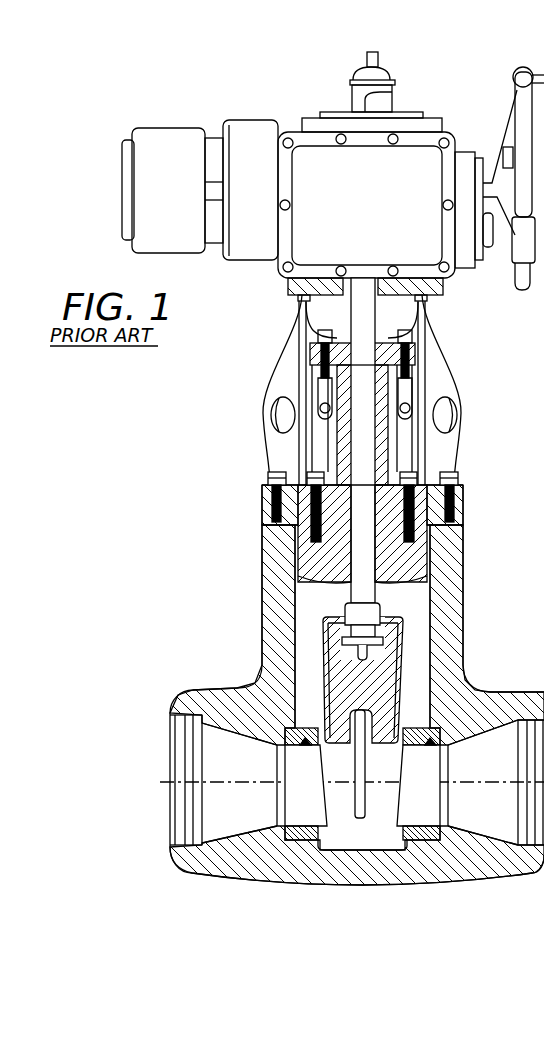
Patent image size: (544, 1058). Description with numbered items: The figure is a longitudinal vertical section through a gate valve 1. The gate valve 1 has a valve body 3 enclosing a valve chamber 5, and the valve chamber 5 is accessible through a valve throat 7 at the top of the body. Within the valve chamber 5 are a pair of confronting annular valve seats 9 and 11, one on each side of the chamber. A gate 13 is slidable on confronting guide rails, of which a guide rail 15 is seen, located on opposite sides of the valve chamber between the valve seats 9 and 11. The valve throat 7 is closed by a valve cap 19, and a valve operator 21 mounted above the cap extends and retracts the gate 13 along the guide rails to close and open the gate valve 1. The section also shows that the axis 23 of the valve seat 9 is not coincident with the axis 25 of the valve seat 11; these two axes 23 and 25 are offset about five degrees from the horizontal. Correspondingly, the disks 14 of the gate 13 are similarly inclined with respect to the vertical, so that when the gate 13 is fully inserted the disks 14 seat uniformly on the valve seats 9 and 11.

The gate valve 1 is at (209, 481).
The valve body 3 is at (262, 566).
The valve chamber 5 is at (420, 656).
The valve throat 7 is at (405, 587).
The valve seat 9 is at (390, 843).
The valve seat 11 is at (337, 843).
The gate 13 is at (337, 623).
The disks 14 is at (323, 650).
The guide rail 15 is at (367, 762).
The valve cap 19 is at (463, 488).
The valve operator 21 is at (472, 318).
The axis 23 is at (410, 788).
The axis 25 is at (278, 786).